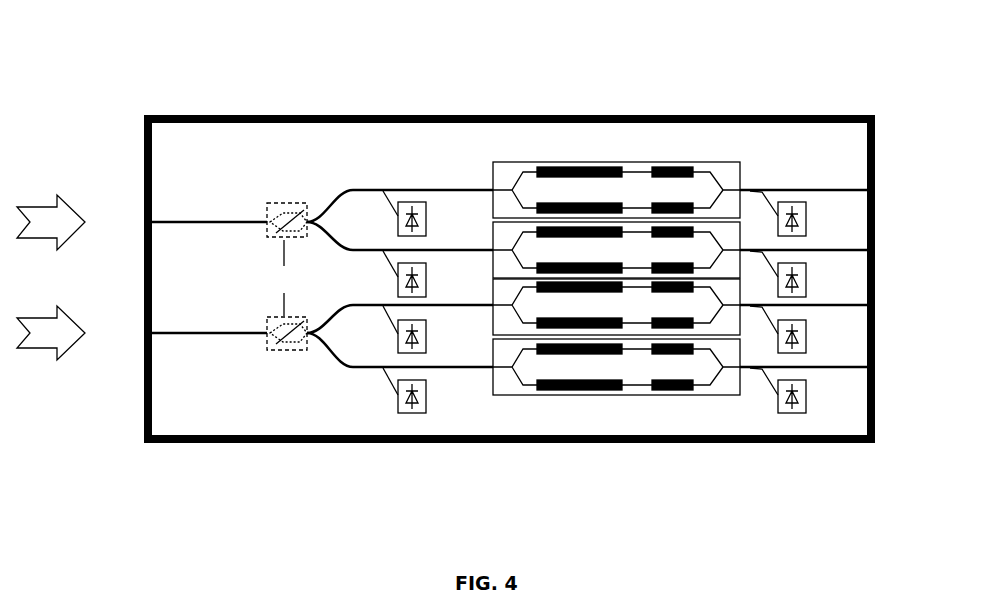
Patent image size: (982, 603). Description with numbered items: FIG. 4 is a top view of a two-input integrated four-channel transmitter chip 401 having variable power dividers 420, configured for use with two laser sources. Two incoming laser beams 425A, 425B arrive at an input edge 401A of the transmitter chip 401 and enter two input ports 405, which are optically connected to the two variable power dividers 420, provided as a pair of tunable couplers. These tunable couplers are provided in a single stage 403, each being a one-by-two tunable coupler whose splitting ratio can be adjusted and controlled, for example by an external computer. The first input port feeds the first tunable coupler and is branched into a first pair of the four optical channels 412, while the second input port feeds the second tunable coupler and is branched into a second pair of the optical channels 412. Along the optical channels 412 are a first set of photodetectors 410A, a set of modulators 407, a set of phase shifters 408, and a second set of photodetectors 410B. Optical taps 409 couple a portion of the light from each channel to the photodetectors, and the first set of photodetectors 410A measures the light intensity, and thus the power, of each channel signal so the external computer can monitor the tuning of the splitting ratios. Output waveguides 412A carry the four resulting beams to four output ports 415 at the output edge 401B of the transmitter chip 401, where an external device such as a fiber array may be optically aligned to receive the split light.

The transmitter chip 401 is at (857, 151).
The input edge 401A is at (158, 80).
The output edge 401B is at (866, 80).
The single stage 403 is at (308, 382).
The input ports 405 is at (175, 456).
The modulators 407 is at (610, 395).
The phase shifters 408 is at (695, 395).
The optical taps 409 is at (381, 204).
The first set of photodetectors 410A is at (455, 456).
The second set of photodetectors 410B is at (833, 456).
The optical channels 412 is at (490, 178).
The output waveguides 412A is at (801, 187).
The output ports 415 is at (922, 407).
The variable power dividers 420 is at (288, 278).
The first incoming laser beam 425A is at (40, 212).
The second incoming laser beam 425B is at (35, 348).